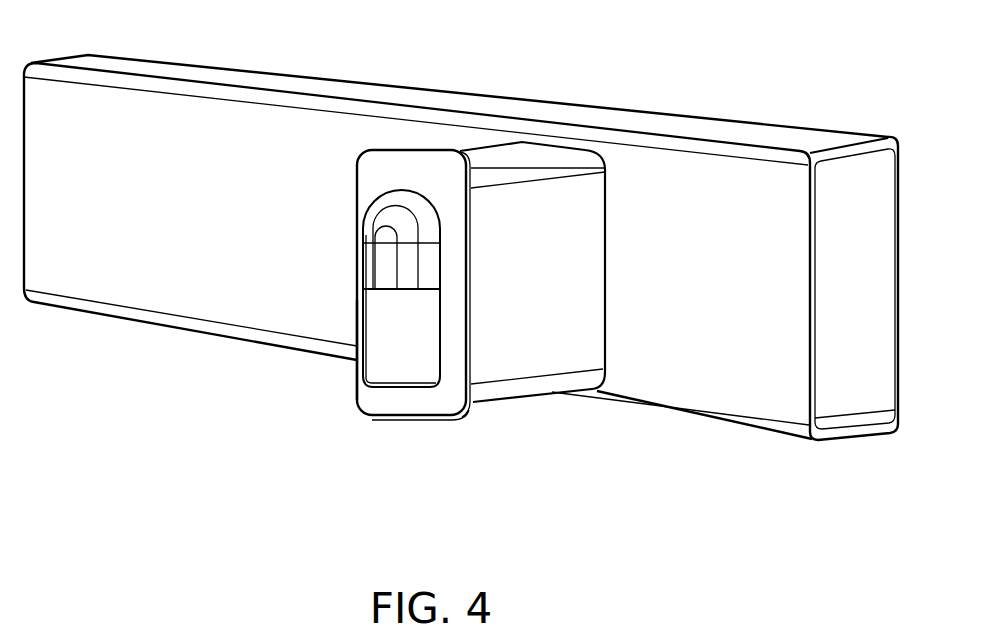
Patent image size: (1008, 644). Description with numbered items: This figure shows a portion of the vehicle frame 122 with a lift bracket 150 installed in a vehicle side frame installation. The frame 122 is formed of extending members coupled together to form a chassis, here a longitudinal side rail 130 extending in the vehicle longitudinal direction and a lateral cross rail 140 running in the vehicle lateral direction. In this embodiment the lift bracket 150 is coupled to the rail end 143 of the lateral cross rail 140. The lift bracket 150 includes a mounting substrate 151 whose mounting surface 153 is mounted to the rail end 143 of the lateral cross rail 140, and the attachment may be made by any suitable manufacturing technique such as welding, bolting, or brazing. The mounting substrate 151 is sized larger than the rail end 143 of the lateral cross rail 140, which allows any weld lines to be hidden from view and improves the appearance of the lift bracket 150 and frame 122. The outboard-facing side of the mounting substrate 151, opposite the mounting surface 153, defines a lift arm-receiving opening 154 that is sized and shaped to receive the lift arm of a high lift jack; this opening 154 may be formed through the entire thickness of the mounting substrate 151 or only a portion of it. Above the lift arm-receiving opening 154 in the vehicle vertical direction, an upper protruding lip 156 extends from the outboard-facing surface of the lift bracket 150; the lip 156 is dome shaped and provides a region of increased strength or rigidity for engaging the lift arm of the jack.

The frame 122 is at (680, 467).
The longitudinal side rail 130 is at (715, 118).
The lateral cross rail 140 is at (535, 382).
The rail end 143 is at (475, 442).
The lift bracket 150 is at (362, 177).
The mounting substrate 151 is at (358, 398).
The mounting surface 153 is at (473, 288).
The lift arm-receiving opening 154 is at (401, 382).
The upper protruding lip 156 is at (377, 261).